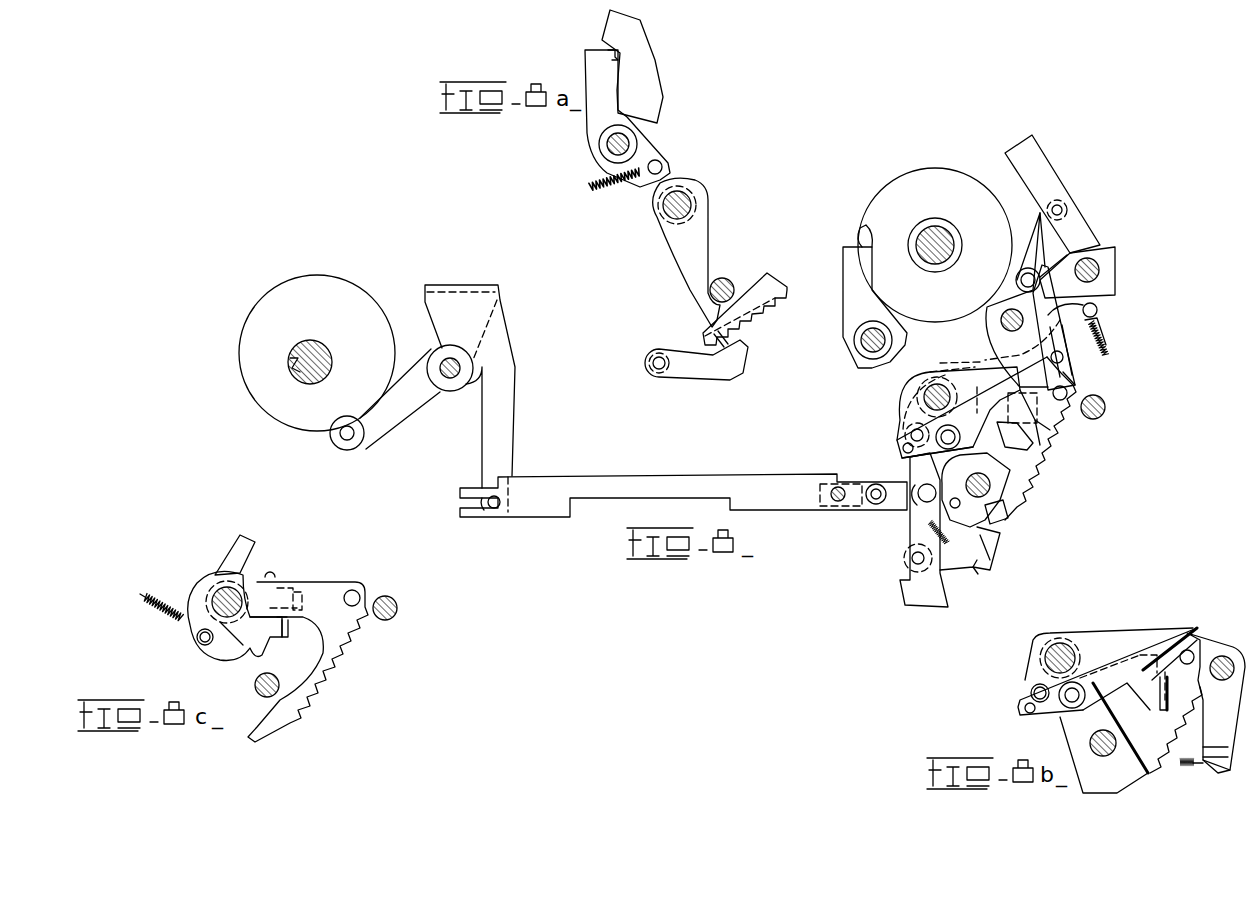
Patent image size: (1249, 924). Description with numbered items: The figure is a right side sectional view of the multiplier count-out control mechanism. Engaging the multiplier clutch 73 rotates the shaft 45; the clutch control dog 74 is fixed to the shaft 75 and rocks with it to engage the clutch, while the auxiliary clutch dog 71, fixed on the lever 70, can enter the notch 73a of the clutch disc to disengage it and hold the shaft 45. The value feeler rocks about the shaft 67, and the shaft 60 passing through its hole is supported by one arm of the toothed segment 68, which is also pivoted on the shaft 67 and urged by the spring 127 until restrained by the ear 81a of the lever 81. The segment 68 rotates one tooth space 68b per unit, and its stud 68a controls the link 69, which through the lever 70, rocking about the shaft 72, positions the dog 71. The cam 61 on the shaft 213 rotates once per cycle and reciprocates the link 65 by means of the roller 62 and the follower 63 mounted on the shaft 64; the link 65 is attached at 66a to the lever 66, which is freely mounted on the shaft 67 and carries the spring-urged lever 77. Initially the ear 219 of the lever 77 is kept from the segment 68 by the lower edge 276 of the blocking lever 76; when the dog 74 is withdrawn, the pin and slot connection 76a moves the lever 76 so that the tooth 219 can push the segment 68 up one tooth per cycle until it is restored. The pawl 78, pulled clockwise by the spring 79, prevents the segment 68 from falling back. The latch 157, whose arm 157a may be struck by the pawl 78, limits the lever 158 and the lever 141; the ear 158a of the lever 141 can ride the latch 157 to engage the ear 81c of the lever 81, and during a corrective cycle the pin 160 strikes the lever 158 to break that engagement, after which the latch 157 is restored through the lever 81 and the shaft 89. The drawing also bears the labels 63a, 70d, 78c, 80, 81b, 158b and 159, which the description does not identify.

In FIG. 8, the shaft 45 is at (935, 226).
In FIG. 8, the shaft 60 is at (910, 435).
In FIG. 8B, the shaft 60 is at (1034, 692).
In FIG. 8C, the shaft 60 is at (198, 639).
In FIG. 8, the cam 61 is at (347, 297).
In FIG. 8, the roller 62 is at (350, 442).
In FIG. 8, the follower 63 is at (403, 402).
In FIG. 8, the pin 63a is at (495, 510).
In FIG. 8, the shaft 64 is at (451, 380).
In FIG. 8, the link 65 is at (667, 480).
In FIG. 8, the lever 66 is at (910, 597).
In FIG. 8, the attachment point 66a is at (920, 502).
In FIG. 8A, the shaft 67 is at (692, 205).
In FIG. 8, the shaft 67 is at (923, 397).
In FIG. 8B, the shaft 67 is at (1062, 650).
In FIG. 8C, the shaft 67 is at (215, 593).
In FIG. 8, the toothed segment 68 is at (1058, 460).
In FIG. 8B, the toothed segment 68 is at (1110, 643).
In FIG. 8C, the toothed segment 68 is at (338, 655).
In FIG. 8, the stud 68a is at (1068, 392).
In FIG. 8, the tooth space 68b is at (1027, 505).
In FIG. 8, the link 69 is at (1068, 372).
In FIG. 8, the lever 70 is at (1038, 237).
In FIG. 8, the pivot 70d is at (1018, 277).
In FIG. 8, the auxiliary clutch dog 71 is at (1033, 158).
In FIG. 8, the shaft 72 is at (1100, 272).
In FIG. 8A, the multiplier clutch 73 is at (632, 40).
In FIG. 8, the multiplier clutch 73 is at (895, 190).
In FIG. 8A, the notch 73a is at (620, 54).
In FIG. 8, the notch 73a is at (860, 229).
In FIG. 8A, the clutch control dog 74 is at (596, 70).
In FIG. 8, the clutch control dog 74 is at (852, 263).
In FIG. 8A, the shaft 75 is at (606, 146).
In FIG. 8, the shaft 75 is at (860, 343).
In FIG. 8A, the blocking lever 76 is at (693, 275).
In FIG. 8A, the pin and slot connection 76a is at (650, 188).
In FIG. 8A, the lever 77 is at (712, 370).
In FIG. 8, the lever 77 is at (975, 572).
In FIG. 8B, the pawl 78 is at (1208, 645).
In FIG. 8B, the lug 78c is at (1207, 768).
In FIG. 8B, the spring 79 is at (1187, 766).
In FIG. 8, the pin 80 is at (1103, 414).
In FIG. 8B, the pin 80 is at (1223, 657).
In FIG. 8C, the pin 80 is at (398, 606).
In FIG. 8, the lever 81 is at (972, 407).
In FIG. 8C, the lever 81 is at (250, 643).
In FIG. 8, the ear 81a is at (1030, 470).
In FIG. 8C, the ear 81a is at (282, 640).
In FIG. 8C, the pawl arm 81b is at (247, 545).
In FIG. 8, the ear 81c is at (975, 380).
In FIG. 8C, the ear 81c is at (298, 585).
In FIG. 8A, the shaft 89 is at (725, 282).
In FIG. 8, the shaft 89 is at (992, 487).
In FIG. 8B, the shaft 89 is at (1090, 745).
In FIG. 8C, the shaft 89 is at (255, 687).
In FIG. 8C, the spring 127 is at (161, 595).
In FIG. 8, the lever 141 is at (1000, 340).
In FIG. 8, the latch 157 is at (903, 450).
In FIG. 8B, the latch 157 is at (1025, 712).
In FIG. 8, the arm 157a is at (1119, 397).
In FIG. 8, the lever 158 is at (1097, 306).
In FIG. 8, the ear 158a is at (1000, 343).
In FIG. 8, the bar end 158b is at (1072, 448).
In FIG. 8, the pin 159 is at (1103, 325).
In FIG. 8, the pin 160 is at (1103, 333).
In FIG. 8, the shaft 213 is at (292, 348).
In FIG. 8, the ear 219 is at (1003, 540).
In FIG. 8A, the lower edge 276 is at (762, 302).